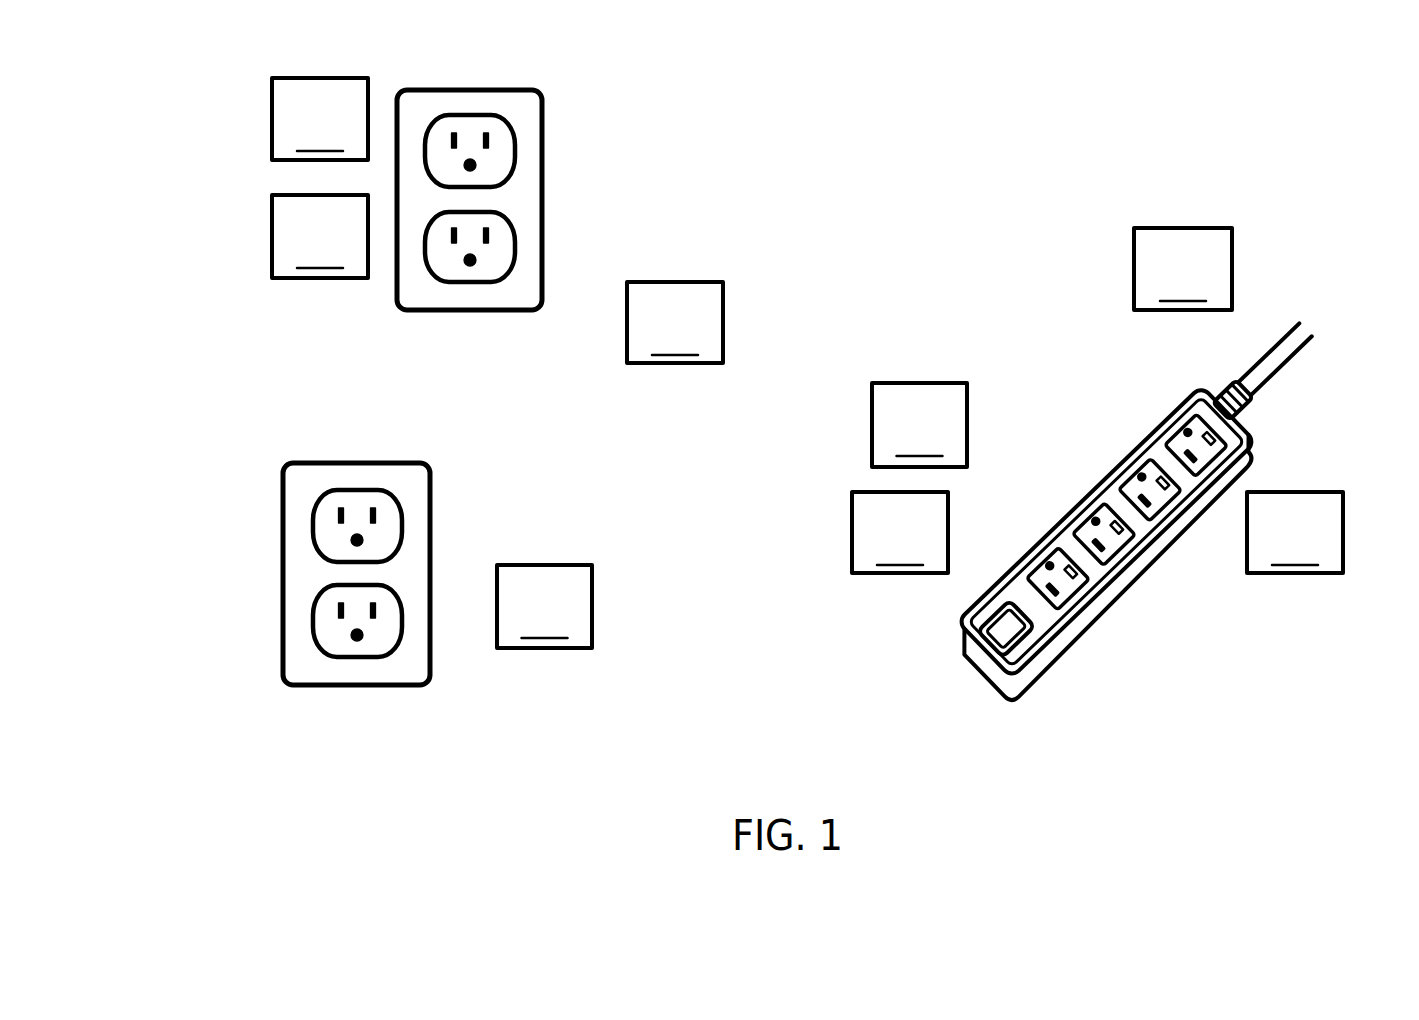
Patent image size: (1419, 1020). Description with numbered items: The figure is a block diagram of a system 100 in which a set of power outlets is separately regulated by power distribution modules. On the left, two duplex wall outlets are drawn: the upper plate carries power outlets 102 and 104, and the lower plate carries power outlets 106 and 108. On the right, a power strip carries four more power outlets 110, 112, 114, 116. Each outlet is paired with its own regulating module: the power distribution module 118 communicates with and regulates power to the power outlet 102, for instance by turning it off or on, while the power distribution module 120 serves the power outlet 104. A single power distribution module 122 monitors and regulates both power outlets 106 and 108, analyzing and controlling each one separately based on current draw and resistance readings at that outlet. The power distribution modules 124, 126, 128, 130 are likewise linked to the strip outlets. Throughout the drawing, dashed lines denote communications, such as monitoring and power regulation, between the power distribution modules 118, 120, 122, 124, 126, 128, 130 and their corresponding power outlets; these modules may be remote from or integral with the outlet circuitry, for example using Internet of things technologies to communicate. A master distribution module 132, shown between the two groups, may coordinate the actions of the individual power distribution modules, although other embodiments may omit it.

The system 100 is at (973, 68).
The power outlet 102 is at (505, 120).
The power outlet 104 is at (508, 230).
The power outlet 106 is at (393, 498).
The power outlet 108 is at (313, 612).
The power outlet 110 is at (1185, 410).
The power outlet 112 is at (1125, 480).
The power outlet 114 is at (1130, 547).
The power outlet 116 is at (1077, 595).
The power distribution module 118 is at (425, 137).
The power distribution module 120 is at (425, 233).
The power distribution module 122 is at (397, 553).
The power distribution module 124 is at (1178, 400).
The power distribution module 126 is at (1083, 513).
The power distribution module 128 is at (1050, 563).
The power distribution module 130 is at (1247, 532).
The master distribution module 132 is at (675, 322).